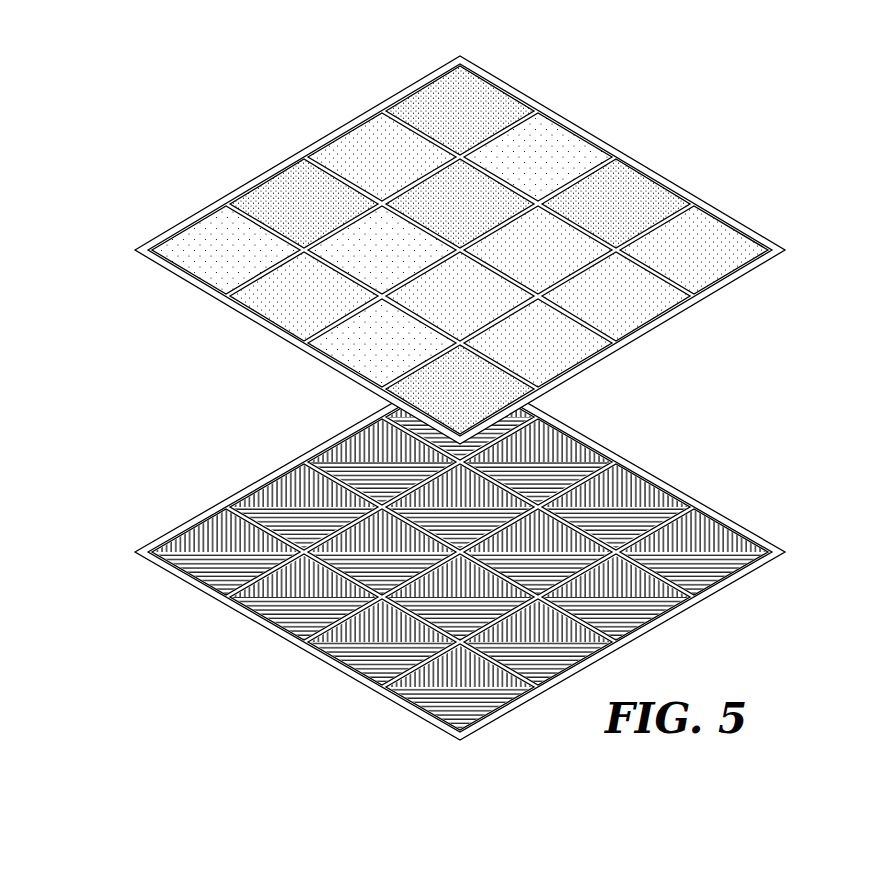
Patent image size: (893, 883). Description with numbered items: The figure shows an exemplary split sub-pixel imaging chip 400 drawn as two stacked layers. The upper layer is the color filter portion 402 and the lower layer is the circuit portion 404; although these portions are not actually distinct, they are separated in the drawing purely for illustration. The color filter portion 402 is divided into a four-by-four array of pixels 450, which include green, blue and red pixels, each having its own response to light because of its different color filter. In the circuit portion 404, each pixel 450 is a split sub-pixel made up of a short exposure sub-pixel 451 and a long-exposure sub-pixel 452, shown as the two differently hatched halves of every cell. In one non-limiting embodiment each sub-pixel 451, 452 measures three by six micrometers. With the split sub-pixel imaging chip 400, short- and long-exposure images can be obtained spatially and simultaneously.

The split sub-pixel imaging chip 400 is at (216, 114).
The color filter portion 402 is at (182, 220).
The circuit portion 404 is at (182, 525).
The pixel 450 is at (523, 142).
The short exposure sub-pixel 451 is at (382, 462).
The long-exposure sub-pixel 452 is at (343, 433).